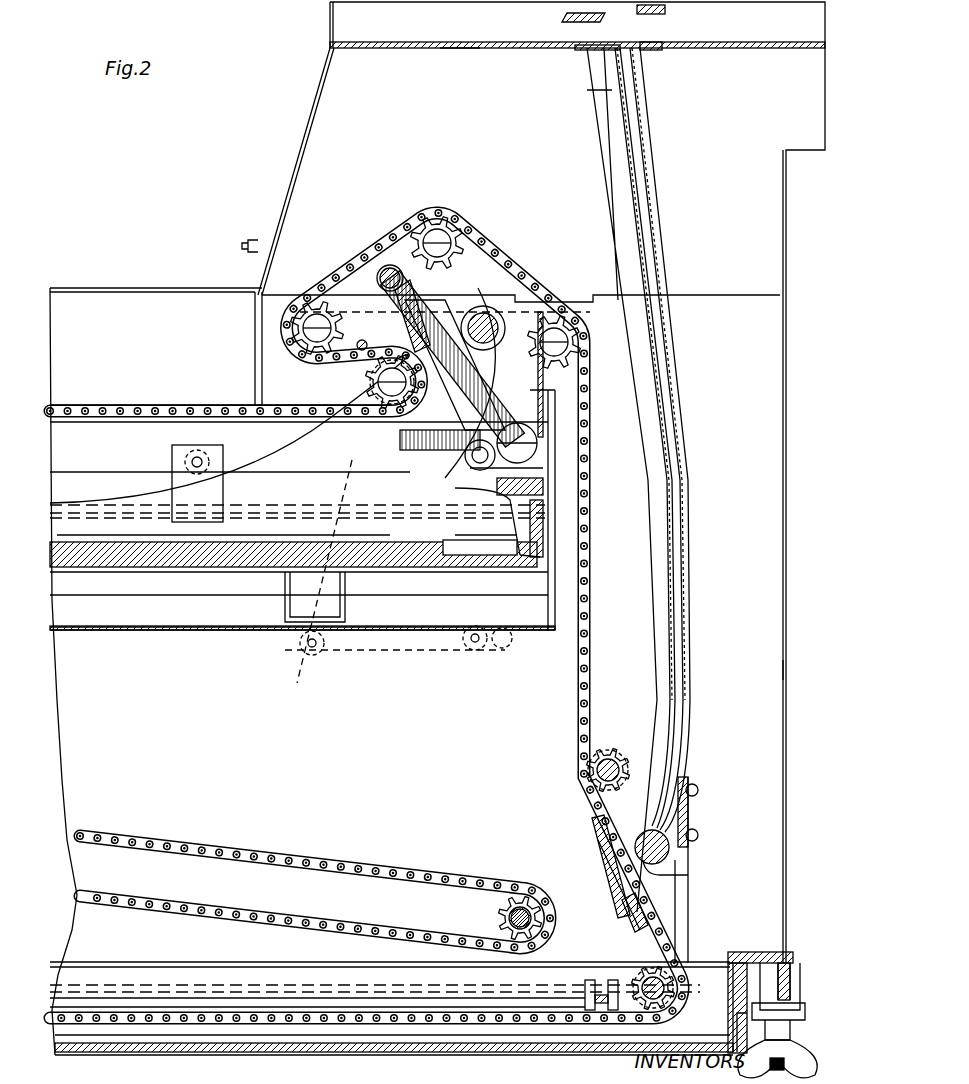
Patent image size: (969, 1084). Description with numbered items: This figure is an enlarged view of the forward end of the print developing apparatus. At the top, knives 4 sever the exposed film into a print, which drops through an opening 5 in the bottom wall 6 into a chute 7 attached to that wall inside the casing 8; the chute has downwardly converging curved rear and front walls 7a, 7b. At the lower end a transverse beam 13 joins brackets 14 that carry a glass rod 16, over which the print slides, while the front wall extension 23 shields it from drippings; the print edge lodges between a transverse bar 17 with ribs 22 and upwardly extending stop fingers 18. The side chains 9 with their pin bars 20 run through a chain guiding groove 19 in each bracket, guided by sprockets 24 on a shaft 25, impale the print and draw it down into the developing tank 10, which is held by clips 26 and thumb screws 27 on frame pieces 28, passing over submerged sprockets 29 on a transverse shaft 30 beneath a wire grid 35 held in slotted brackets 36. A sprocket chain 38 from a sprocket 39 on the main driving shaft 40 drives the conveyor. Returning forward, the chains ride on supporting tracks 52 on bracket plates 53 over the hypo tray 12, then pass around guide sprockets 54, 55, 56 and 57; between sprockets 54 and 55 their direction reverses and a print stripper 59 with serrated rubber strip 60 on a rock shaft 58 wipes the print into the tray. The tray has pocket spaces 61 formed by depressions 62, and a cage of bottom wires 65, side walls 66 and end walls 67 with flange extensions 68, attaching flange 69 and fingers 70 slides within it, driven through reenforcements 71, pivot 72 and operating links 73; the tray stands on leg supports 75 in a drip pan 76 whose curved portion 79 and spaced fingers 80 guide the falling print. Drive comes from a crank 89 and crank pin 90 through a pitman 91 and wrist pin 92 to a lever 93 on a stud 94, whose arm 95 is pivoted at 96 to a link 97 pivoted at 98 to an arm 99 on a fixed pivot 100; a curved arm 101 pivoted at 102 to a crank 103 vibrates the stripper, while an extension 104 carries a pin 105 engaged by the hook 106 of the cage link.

The knives 4 is at (665, 12).
The opening 5 is at (593, 66).
The bottom wall 6 is at (458, 48).
The chute 7 is at (660, 158).
The rear wall 7a is at (690, 600).
The front wall 7b is at (662, 600).
The casing 8 is at (788, 672).
The side chains 9 is at (577, 718).
The developing tank 10 is at (280, 1052).
The hypo tray 12 is at (200, 567).
The transverse beam 13 is at (688, 812).
The brackets 14 is at (688, 875).
The glass rod 16 is at (669, 840).
The transverse bar 17 is at (622, 912).
The stop fingers 18 is at (608, 870).
The chain guiding groove 19 is at (645, 910).
The pin bars 20 is at (455, 375).
The ribs 22 is at (655, 930).
The extension 23 is at (592, 822).
The sprockets 24 is at (612, 745).
The shaft 25 is at (622, 760).
The clips 26 is at (805, 1012).
The thumb screws 27 is at (810, 1050).
The frame pieces 28 is at (770, 960).
The sprockets 29 is at (640, 1010).
The transverse shaft 30 is at (650, 975).
The wire grid 35 is at (210, 1000).
The slotted brackets 36 is at (590, 980).
The sprocket chain 38 is at (325, 867).
The sprocket 39 is at (495, 918).
The main driving shaft 40 is at (525, 908).
The supporting tracks 52 is at (140, 422).
The bracket plates 53 is at (195, 333).
The guide sprocket 54 is at (365, 385).
The guide sprocket 55 is at (363, 290).
The guide sprocket 56 is at (458, 245).
The guide sprocket 57 is at (575, 360).
The rock shaft 58 is at (382, 268).
The print stripper 59 is at (410, 295).
The serrated rubber strip 60 is at (450, 345).
The pocket spaces 61 is at (478, 555).
The depressions 62 is at (495, 567).
The bottom wires 65 is at (268, 535).
The side walls 66 is at (80, 478).
The end walls 67 is at (543, 525).
The flange extensions 68 is at (540, 557).
The attaching flange 69 is at (478, 540).
The fingers 70 is at (455, 488).
The reenforcements 71 is at (178, 468).
The pivot 72 is at (200, 455).
The operating links 73 is at (300, 465).
The leg supports 75 is at (365, 600).
The drip pan 76 is at (175, 630).
The curved portion 79 is at (500, 290).
The spaced fingers 80 is at (470, 408).
The crank 89 is at (500, 650).
The crank pin 90 is at (468, 650).
The pitman 91 is at (400, 650).
The wrist pin 92 is at (315, 655).
The lever 93 is at (285, 605).
The stud 94 is at (395, 580).
The lever arm 95 is at (343, 486).
The pivot 96 is at (365, 440).
The link 97 is at (440, 437).
The pivot 98 is at (537, 435).
The arm 99 is at (475, 390).
The fixed pivot 100 is at (470, 315).
The curved arm 101 is at (543, 405).
The pivot 102 is at (380, 343).
The crank 103 is at (334, 328).
The extension 104 is at (495, 455).
The pin 105 is at (543, 485).
The hook 106 is at (543, 495).